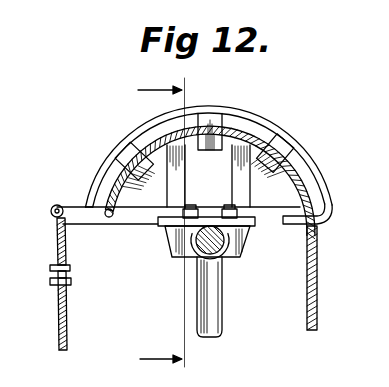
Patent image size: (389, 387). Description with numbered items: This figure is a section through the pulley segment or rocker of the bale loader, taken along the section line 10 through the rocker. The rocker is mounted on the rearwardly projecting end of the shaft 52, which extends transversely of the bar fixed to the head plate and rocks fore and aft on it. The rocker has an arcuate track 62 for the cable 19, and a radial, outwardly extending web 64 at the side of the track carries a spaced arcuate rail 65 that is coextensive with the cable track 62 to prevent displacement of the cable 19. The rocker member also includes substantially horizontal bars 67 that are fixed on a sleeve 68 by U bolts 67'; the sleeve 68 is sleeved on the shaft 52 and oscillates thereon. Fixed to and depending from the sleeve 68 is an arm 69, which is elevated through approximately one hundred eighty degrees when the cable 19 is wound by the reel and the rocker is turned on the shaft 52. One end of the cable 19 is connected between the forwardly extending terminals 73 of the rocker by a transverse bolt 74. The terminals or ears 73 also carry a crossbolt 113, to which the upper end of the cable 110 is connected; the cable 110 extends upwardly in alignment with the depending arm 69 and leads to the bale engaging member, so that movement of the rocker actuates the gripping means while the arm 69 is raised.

The axle 10 is at (177, 225).
The cable 19 is at (317, 287).
The shaft 52 is at (223, 257).
The arcuate track 62 is at (265, 144).
The web 64 is at (290, 162).
The arcuate rail 65 is at (230, 110).
The horizontal bar 67 is at (316, 223).
The U bolt 67' is at (177, 260).
The sleeve 68 is at (183, 237).
The arm 69 is at (222, 326).
The forwardly extending terminals 73 is at (50, 225).
The transverse bolt 74 is at (95, 208).
The cable 110 is at (56, 320).
The crossbolt 113 is at (54, 206).